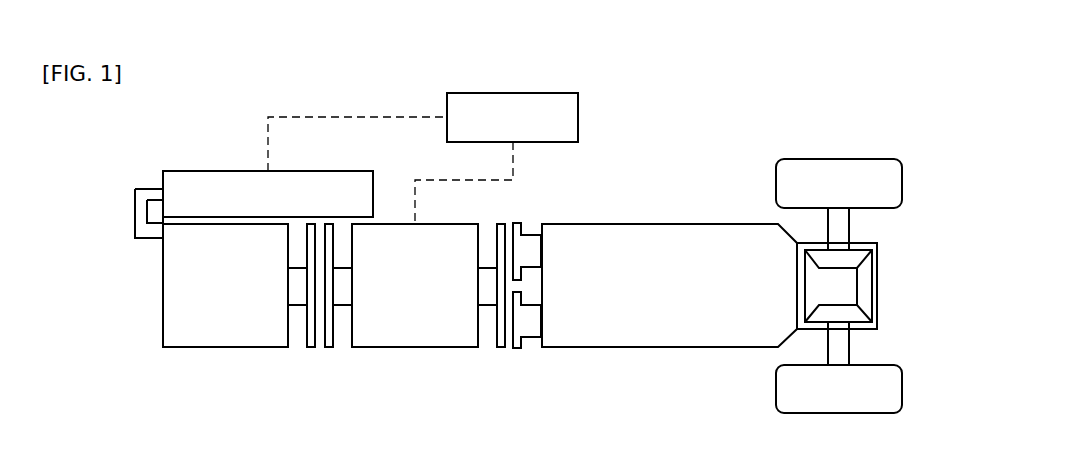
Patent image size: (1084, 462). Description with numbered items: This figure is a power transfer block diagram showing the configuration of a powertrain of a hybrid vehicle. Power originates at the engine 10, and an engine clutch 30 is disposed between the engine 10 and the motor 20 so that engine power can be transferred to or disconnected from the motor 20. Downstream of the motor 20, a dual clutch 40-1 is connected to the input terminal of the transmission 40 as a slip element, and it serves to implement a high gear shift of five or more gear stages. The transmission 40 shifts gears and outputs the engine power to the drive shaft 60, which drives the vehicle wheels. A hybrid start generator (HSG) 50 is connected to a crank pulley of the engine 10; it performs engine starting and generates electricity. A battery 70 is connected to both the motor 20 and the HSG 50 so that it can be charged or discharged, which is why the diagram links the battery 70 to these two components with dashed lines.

The engine 10 is at (202, 348).
The motor 20 is at (430, 348).
The engine clutch 30 is at (335, 235).
The transmission 40 is at (665, 224).
The dual clutch 40-1 is at (518, 223).
The hybrid start generator (HSG) 50 is at (212, 170).
The drive shaft 60 is at (838, 231).
The battery 70 is at (578, 117).